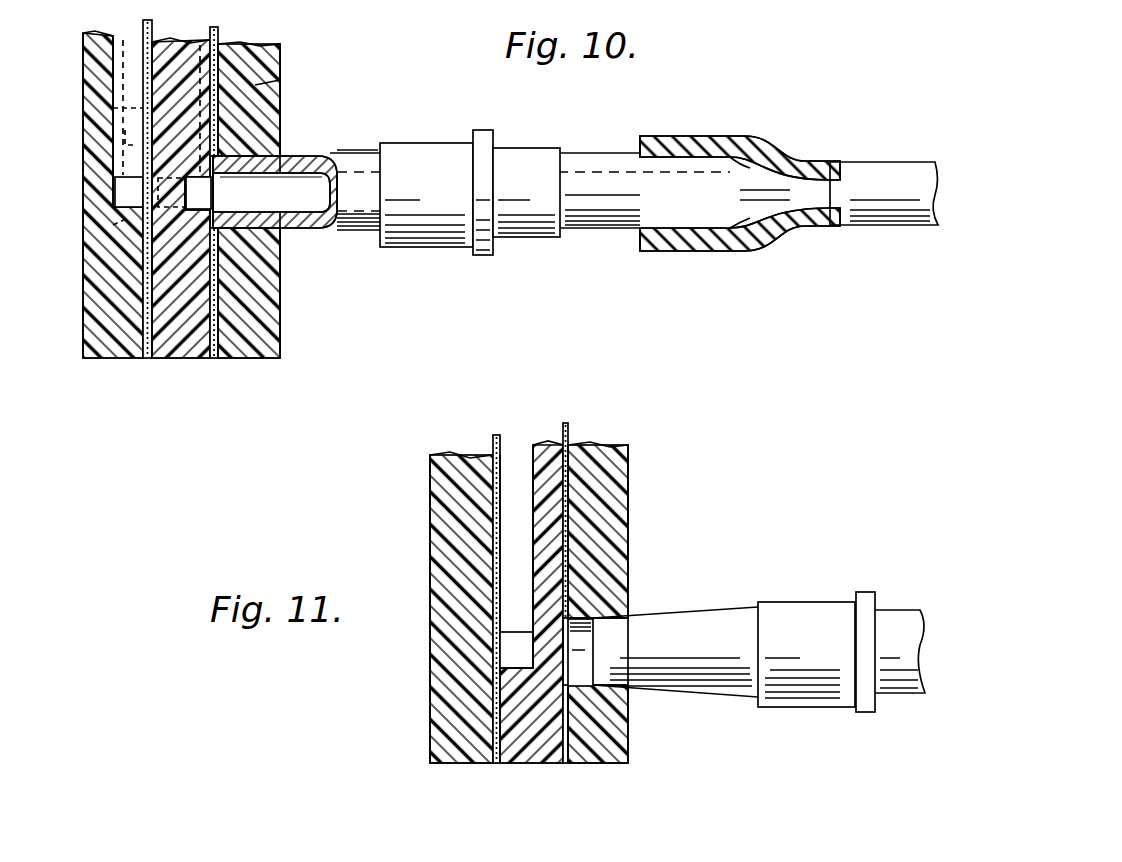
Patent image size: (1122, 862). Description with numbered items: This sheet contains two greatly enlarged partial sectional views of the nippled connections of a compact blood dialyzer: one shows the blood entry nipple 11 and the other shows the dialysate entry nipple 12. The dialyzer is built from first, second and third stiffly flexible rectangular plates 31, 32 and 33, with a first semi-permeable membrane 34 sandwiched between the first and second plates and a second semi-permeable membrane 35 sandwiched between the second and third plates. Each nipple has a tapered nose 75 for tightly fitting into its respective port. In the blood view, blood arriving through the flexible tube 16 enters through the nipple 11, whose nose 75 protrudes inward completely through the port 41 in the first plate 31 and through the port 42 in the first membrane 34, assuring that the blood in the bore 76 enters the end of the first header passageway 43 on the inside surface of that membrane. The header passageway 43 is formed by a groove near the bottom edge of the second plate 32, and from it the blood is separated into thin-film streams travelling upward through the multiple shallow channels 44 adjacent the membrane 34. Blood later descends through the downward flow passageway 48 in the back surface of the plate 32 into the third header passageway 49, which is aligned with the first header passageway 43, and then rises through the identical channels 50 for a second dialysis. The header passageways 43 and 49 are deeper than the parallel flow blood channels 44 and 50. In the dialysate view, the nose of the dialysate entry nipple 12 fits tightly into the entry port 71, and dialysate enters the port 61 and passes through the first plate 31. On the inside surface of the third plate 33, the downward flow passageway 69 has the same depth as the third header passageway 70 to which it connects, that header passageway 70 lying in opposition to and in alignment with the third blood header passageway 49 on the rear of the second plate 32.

In FIG. 10, the blood entry nipple connection 11 is at (456, 263).
In FIG. 11, the dialysate entry nipple connection 12 is at (821, 586).
In FIG. 10, the flexible tube 16 is at (880, 165).
In FIG. 10, the first rectangular plate 31 is at (262, 362).
In FIG. 11, the first rectangular plate 31 is at (615, 488).
In FIG. 10, the second rectangular plate 32 is at (190, 362).
In FIG. 11, the second rectangular plate 32 is at (538, 765).
In FIG. 10, the third rectangular plate 33 is at (108, 362).
In FIG. 11, the third rectangular plate 33 is at (455, 455).
In FIG. 10, the first semi-permeable membrane 34 is at (215, 362).
In FIG. 11, the first semi-permeable membrane 34 is at (568, 430).
In FIG. 10, the second semi-permeable membrane 35 is at (147, 362).
In FIG. 11, the second semi-permeable membrane 35 is at (500, 440).
In FIG. 10, the port in first plate 41 is at (310, 152).
In FIG. 10, the port in first membrane 42 is at (258, 154).
In FIG. 10, the first header passageway 43 is at (200, 197).
In FIG. 10, the blood channels 44 is at (282, 79).
In FIG. 11, the downward flow passageway 48 is at (515, 545).
In FIG. 10, the third header passageway 49 is at (113, 225).
In FIG. 11, the third header passageway 49 is at (520, 650).
In FIG. 10, the blood channels 50 is at (112, 108).
In FIG. 11, the dialysate port 61 is at (620, 627).
In FIG. 10, the downward flow passageway 69 is at (135, 66).
In FIG. 10, the third header passageway 70 is at (125, 192).
In FIG. 10, the entry port 71 is at (100, 131).
In FIG. 10, the tapered nose 75 is at (325, 152).
In FIG. 11, the tapered nose 75 is at (698, 612).
In FIG. 10, the bore 76 is at (301, 202).